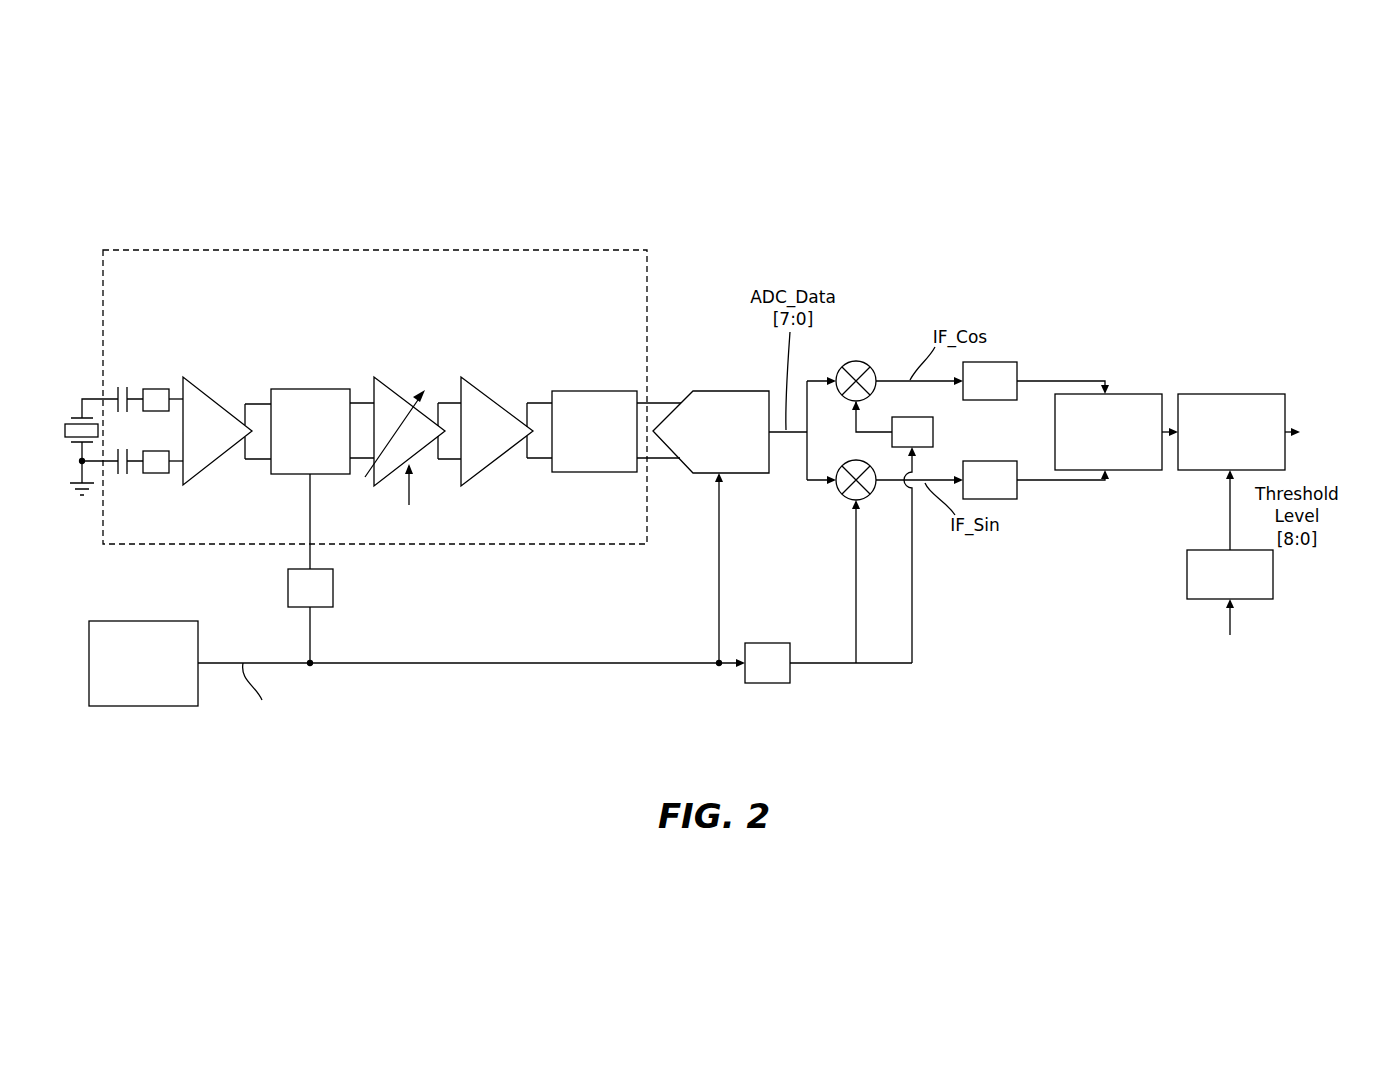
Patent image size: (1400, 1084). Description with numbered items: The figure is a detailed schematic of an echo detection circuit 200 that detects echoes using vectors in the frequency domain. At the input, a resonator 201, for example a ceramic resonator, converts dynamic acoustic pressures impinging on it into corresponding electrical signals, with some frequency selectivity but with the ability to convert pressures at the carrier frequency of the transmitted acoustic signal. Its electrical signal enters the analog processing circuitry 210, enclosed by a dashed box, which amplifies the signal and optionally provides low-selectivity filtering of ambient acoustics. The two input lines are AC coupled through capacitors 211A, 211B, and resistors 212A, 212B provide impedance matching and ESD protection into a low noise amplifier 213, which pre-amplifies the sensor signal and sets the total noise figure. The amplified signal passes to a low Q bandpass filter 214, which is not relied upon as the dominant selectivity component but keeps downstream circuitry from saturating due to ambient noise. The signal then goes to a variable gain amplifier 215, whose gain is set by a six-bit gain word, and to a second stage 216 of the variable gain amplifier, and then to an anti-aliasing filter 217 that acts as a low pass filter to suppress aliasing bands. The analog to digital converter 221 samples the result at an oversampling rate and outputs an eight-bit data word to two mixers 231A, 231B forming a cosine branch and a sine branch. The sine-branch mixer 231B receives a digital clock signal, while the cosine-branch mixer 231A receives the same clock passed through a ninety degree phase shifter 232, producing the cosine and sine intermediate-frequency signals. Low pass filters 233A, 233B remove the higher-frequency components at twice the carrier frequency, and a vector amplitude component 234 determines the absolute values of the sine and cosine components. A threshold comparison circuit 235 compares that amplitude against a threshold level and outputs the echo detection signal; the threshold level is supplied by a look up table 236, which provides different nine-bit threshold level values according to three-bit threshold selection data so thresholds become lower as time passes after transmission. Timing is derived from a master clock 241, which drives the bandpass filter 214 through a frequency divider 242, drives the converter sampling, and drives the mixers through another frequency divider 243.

The echo detection circuit 200 is at (805, 198).
The resonator 201 is at (80, 400).
The analog processing circuitry 210 is at (375, 397).
The capacitor 211A is at (122, 385).
The capacitor 211B is at (123, 476).
The resistor 212A is at (155, 389).
The resistor 212B is at (155, 474).
The low noise amplifier 213 is at (218, 396).
The bandpass filter 214 is at (310, 388).
The variable gain amplifier 215 is at (396, 395).
The second stage of the variable gain amplifier 216 is at (487, 393).
The anti-aliasing filter 217 is at (586, 391).
The analog to digital converter 221 is at (706, 391).
The mixer 231A is at (868, 362).
The mixer 231B is at (843, 497).
The 90 degree phase shifter 232 is at (933, 432).
The low pass filter 233A is at (1008, 362).
The low pass filter 233B is at (1010, 500).
The vector amplitude component 234 is at (1133, 394).
The threshold comparison circuit 235 is at (1235, 394).
The look up table 236 is at (1273, 575).
The master clock 241 is at (150, 621).
The frequency divider 242 is at (333, 582).
The frequency divider 243 is at (768, 683).